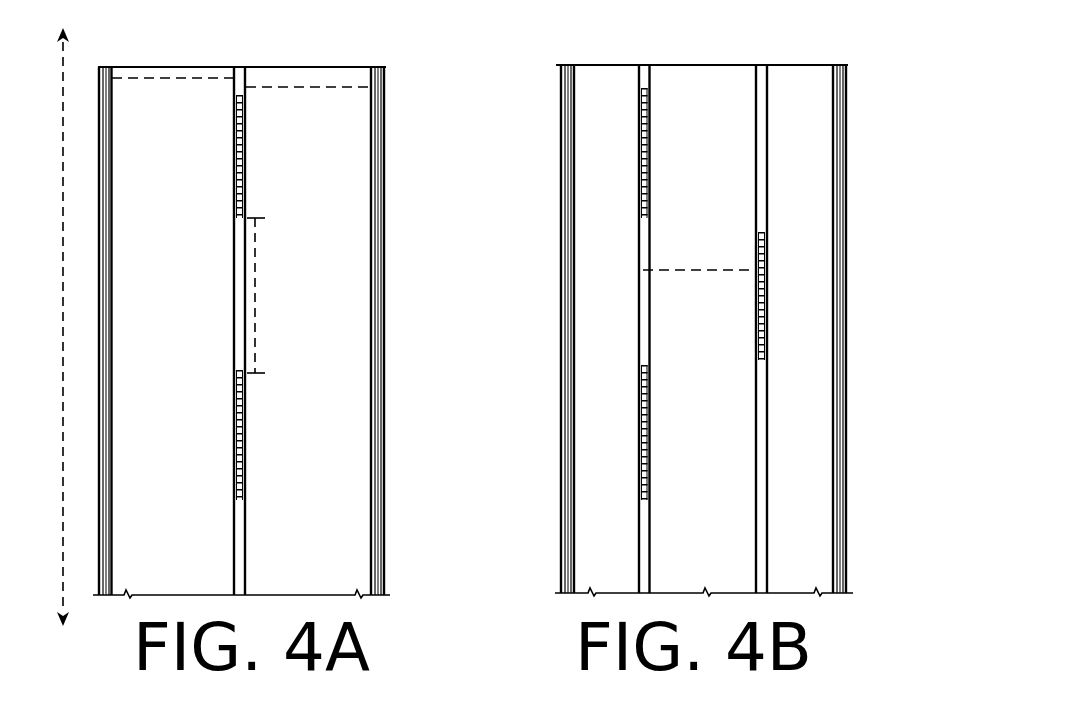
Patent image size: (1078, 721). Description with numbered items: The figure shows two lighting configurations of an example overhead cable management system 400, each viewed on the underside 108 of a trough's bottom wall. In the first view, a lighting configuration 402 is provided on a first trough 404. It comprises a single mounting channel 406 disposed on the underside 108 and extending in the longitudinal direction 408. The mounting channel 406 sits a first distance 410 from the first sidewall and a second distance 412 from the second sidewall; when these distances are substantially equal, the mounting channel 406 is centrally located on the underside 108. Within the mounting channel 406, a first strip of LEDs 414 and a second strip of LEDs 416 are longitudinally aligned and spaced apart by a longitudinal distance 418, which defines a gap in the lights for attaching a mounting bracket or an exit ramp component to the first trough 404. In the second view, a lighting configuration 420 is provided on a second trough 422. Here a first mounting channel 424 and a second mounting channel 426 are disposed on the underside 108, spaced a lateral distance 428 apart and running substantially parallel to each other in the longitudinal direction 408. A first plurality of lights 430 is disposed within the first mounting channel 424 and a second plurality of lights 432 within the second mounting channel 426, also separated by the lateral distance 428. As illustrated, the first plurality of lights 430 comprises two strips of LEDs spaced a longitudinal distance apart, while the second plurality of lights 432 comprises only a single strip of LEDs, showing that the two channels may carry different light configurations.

In FIG. 4A, the underside 108 is at (333, 457).
In FIG. 4B, the overhead cable management system 400 is at (860, 21).
In FIG. 4A, the lighting configuration 402 is at (358, 163).
In FIG. 4A, the first trough 404 is at (337, 147).
In FIG. 4A, the mounting channel 406 is at (240, 555).
In FIG. 4A, the longitudinal direction 408 is at (73, 70).
In FIG. 4A, the first distance 410 is at (143, 78).
In FIG. 4A, the second distance 412 is at (282, 86).
In FIG. 4A, the first strip of LEDs 414 is at (238, 156).
In FIG. 4A, the second strip of LEDs 416 is at (238, 440).
In FIG. 4A, the longitudinal distance 418 is at (257, 318).
In FIG. 4B, the lighting configuration 420 is at (810, 160).
In FIG. 4B, the second trough 422 is at (787, 144).
In FIG. 4B, the first mounting channel 424 is at (643, 352).
In FIG. 4B, the second mounting channel 426 is at (763, 443).
In FIG. 4B, the lateral distance 428 is at (690, 270).
In FIG. 4B, the first plurality of lights 430 is at (643, 155).
In FIG. 4B, the second plurality of lights 432 is at (767, 292).